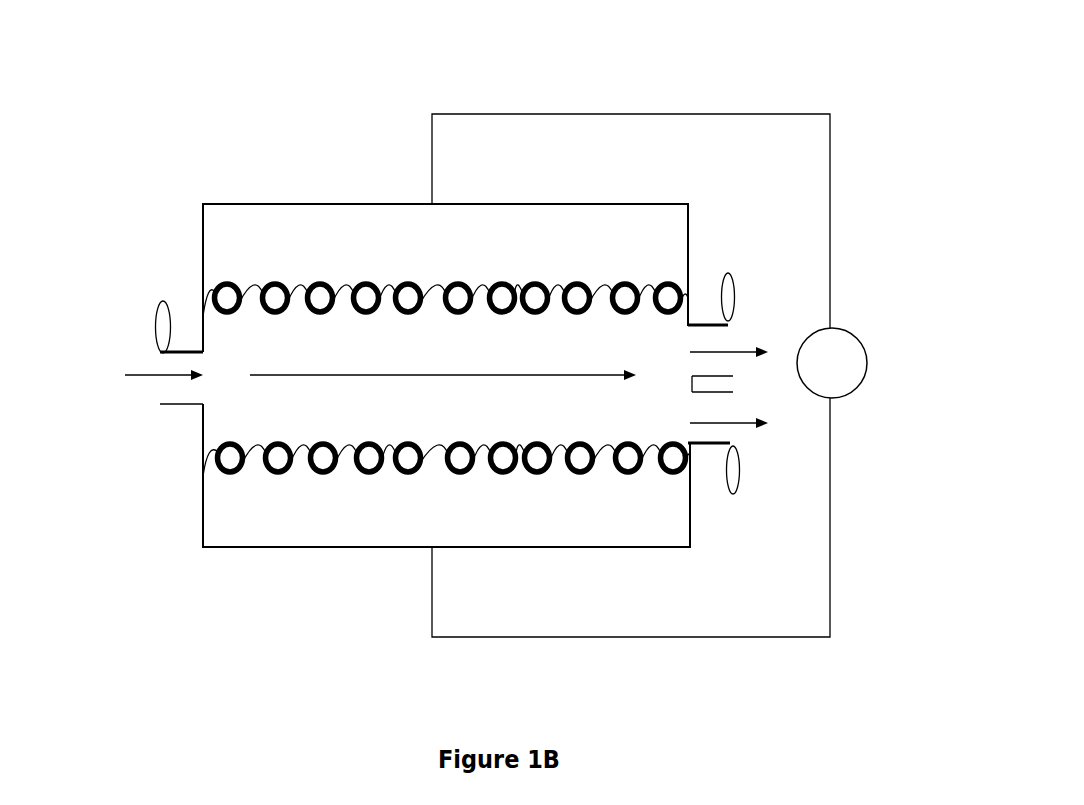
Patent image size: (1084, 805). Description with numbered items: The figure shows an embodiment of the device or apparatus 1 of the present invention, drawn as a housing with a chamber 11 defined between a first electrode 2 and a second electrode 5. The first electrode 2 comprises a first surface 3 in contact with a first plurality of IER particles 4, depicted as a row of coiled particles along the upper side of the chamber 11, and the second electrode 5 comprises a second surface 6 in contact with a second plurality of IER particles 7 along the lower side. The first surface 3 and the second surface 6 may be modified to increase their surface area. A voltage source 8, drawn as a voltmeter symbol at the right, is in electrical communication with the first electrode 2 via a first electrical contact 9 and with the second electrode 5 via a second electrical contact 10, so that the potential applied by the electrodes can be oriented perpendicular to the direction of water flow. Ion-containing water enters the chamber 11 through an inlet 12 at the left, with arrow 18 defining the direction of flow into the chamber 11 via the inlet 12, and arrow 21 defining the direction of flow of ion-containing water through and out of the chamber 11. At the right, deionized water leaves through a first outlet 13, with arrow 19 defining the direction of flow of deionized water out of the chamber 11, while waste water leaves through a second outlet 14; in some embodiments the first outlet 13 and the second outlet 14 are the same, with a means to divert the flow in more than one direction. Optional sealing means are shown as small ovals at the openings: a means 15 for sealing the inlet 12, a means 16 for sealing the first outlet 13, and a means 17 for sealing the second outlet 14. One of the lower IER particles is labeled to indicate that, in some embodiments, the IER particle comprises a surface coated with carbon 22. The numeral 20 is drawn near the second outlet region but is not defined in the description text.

The device or apparatus 1 is at (183, 142).
The first electrode 2 is at (408, 245).
The first surface 3 is at (395, 283).
The first plurality of IER particles 4 is at (275, 288).
The second electrode 5 is at (333, 495).
The second surface 6 is at (298, 455).
The second plurality of IER particles 7 is at (278, 468).
The voltage source 8 is at (867, 363).
The first electrical contact 9 is at (830, 300).
The second electrical contact 10 is at (830, 415).
The chamber 11 is at (443, 353).
The inlet 12 is at (153, 353).
The first outlet 13 is at (707, 365).
The second outlet 14 is at (729, 400).
The means for sealing the inlet 15 is at (163, 307).
The means for sealing the first outlet 16 is at (727, 300).
The means for sealing the second outlet 17 is at (740, 497).
The arrow 18 is at (155, 373).
The arrow 19 is at (712, 350).
The lower outlet opening 20 is at (736, 480).
The arrow 21 is at (454, 380).
The carbon 22 is at (537, 445).